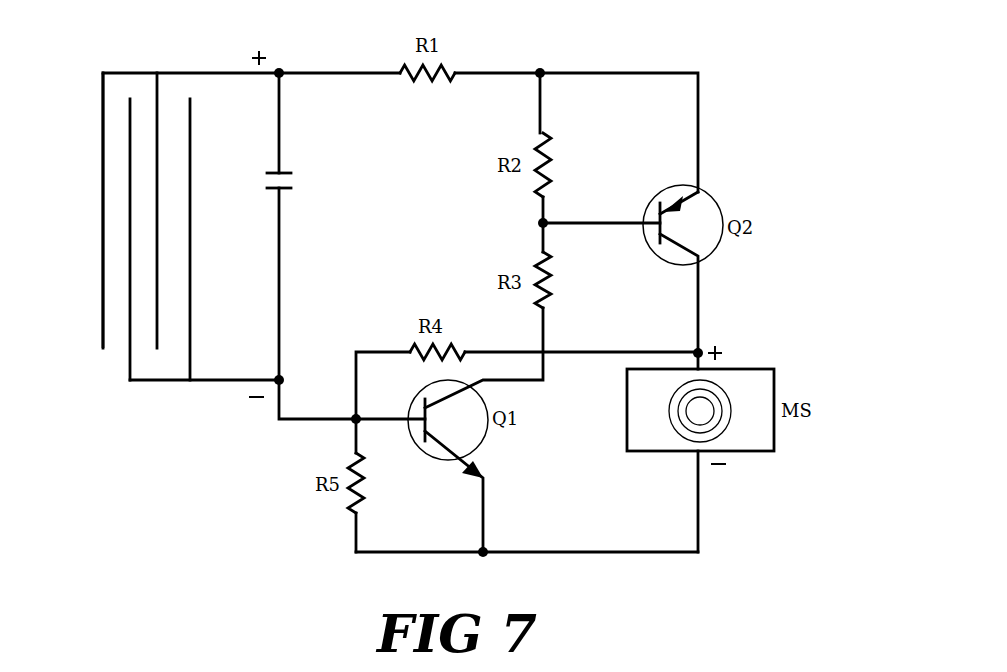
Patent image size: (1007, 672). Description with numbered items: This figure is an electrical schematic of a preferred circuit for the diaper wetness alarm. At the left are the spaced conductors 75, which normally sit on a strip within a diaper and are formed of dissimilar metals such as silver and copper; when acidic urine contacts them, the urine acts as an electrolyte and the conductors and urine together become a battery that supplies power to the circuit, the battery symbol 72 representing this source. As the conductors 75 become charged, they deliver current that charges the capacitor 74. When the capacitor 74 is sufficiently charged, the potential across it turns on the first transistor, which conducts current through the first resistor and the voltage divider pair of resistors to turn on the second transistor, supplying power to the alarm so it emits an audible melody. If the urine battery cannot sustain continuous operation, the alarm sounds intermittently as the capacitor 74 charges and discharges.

The battery 72 is at (172, 60).
The capacitor 74 is at (283, 173).
The spaced conductors 75 is at (85, 208).